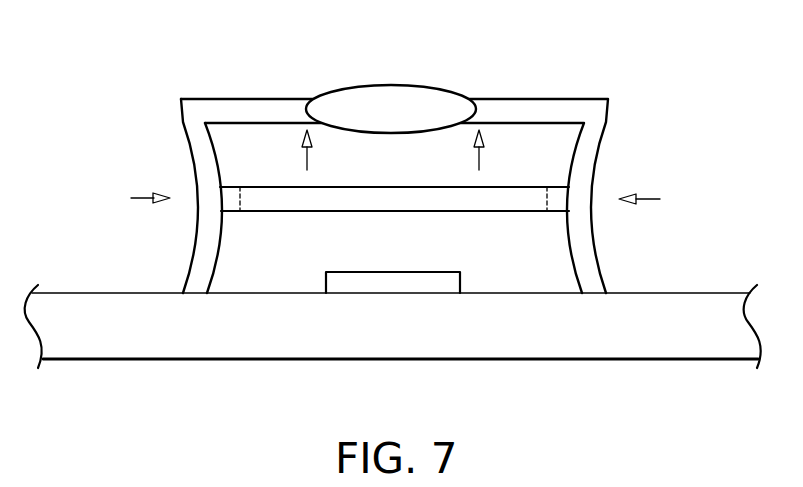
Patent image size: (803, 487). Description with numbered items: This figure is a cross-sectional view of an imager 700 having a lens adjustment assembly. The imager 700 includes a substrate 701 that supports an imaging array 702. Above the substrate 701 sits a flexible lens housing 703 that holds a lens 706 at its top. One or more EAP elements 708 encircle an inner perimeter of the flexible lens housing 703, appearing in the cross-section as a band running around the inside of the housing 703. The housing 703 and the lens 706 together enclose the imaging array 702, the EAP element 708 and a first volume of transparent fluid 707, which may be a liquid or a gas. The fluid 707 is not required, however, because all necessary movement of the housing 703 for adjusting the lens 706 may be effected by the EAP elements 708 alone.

The imager 700 is at (93, 85).
The substrate 701 is at (708, 343).
The imaging array 702 is at (360, 286).
The flexible lens housing 703 is at (256, 110).
The lens 706 is at (411, 118).
The transparent fluid 707 is at (268, 163).
The EAP element 708 is at (537, 197).